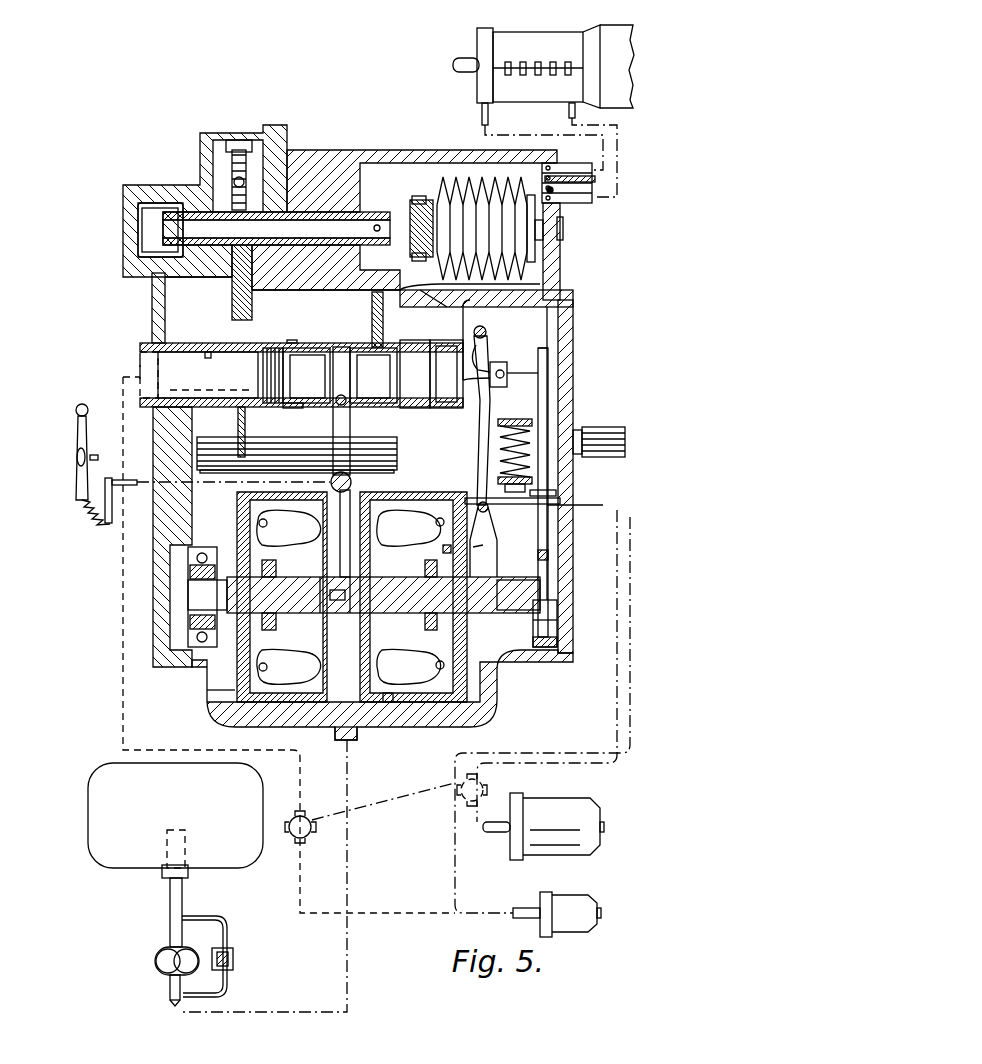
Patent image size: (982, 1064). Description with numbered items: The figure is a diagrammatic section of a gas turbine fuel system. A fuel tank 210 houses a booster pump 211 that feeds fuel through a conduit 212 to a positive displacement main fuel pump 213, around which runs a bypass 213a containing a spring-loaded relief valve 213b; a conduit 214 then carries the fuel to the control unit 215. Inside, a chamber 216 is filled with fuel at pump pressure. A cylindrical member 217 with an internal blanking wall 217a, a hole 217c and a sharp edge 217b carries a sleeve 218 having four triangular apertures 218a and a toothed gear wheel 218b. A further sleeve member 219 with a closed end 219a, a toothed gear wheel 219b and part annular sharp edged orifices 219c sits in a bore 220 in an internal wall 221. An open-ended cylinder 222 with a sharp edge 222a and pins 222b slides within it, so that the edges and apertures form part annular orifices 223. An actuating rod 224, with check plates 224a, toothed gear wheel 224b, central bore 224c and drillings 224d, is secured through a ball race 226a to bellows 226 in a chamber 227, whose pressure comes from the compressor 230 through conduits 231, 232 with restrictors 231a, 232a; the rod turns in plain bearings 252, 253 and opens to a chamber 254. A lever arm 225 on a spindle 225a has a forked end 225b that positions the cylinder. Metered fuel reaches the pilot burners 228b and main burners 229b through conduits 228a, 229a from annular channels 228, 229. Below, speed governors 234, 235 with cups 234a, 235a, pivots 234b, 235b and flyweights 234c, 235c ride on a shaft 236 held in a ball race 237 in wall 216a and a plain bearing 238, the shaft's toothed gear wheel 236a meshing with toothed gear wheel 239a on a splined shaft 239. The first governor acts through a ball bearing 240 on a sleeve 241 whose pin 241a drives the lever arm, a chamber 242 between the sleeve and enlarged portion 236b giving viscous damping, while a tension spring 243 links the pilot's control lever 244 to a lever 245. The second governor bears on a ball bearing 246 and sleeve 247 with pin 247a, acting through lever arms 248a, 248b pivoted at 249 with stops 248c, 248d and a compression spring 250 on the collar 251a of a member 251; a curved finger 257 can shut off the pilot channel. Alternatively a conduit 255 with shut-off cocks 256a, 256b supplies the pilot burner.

The fuel tank 210 is at (132, 843).
The booster pump 211 is at (167, 851).
The conduit 212 is at (170, 912).
The main fuel pump 213 is at (156, 963).
The bypass 213a is at (182, 926).
The spring-loaded relief valve 213b is at (234, 961).
The conduit 214 is at (353, 760).
The control unit 215 is at (545, 672).
The chamber 216 is at (330, 339).
The wall of chamber 216a is at (153, 656).
The cylindrical member 217 is at (155, 335).
The internal blanking wall 217a is at (250, 385).
The sharp edge 217b is at (246, 322).
The hole 217c is at (245, 367).
The sleeve 218 is at (196, 343).
The triangular apertures 218a is at (272, 364).
The toothed gear wheel 218b is at (236, 345).
The sleeve member 219 is at (530, 312).
The closed end 219a is at (500, 352).
The toothed gear wheel 219b is at (372, 309).
The part annular sharp edged orifices 219c is at (431, 374).
The bore 220 is at (562, 297).
The internal wall 221 is at (482, 290).
The open-ended cylinder 222 is at (324, 404).
The sharp edge 222a is at (290, 405).
The pins 222b is at (332, 380).
The part annular orifices 223 is at (240, 412).
The actuating rod 224 is at (362, 210).
The check plates 224a is at (247, 140).
The toothed gear wheel 224b is at (204, 162).
The central bore 224c is at (142, 206).
The drillings 224d is at (329, 267).
The lever arm 225 is at (343, 445).
The spindle 225a is at (352, 483).
The forked end 225b is at (291, 345).
The bellows 226 is at (445, 185).
The ball race 226a is at (418, 200).
The chamber 227 is at (404, 277).
The annular channel 228 is at (417, 303).
The conduit 228a is at (560, 522).
The pilot burners 228b is at (566, 907).
The annular channel 229 is at (468, 303).
The conduit 229a is at (590, 505).
The main burners 229b is at (565, 823).
The compressor 230 is at (498, 40).
The conduit 231 is at (568, 171).
The restrictor 231a is at (532, 162).
The conduit 232 is at (596, 192).
The restrictor 232a is at (555, 193).
The speed governor 234 is at (307, 641).
The cylindrical cup 234a is at (240, 700).
The pivots 234b is at (240, 496).
The flyweights 234c is at (302, 668).
The speed governor 235 is at (453, 626).
The cylindrical cup 235a is at (440, 741).
The pivots 235b is at (436, 523).
The flyweights 235c is at (398, 704).
The shaft 236 is at (527, 600).
The toothed gear wheel 236a is at (549, 595).
The enlarged portion 236b is at (276, 595).
The ball race 237 is at (190, 577).
The plain bearing 238 is at (549, 582).
The splined shaft 239 is at (549, 470).
The toothed gear wheel 239a is at (549, 547).
The ball bearing 240 is at (270, 563).
The sleeve 241 is at (292, 576).
The pin 241a is at (362, 586).
The chamber 242 is at (302, 606).
The tension spring 243 is at (94, 514).
The pilot's control lever 244 is at (82, 404).
The lever 245 is at (108, 526).
The ball bearing 246 is at (402, 660).
The sleeve 247 is at (557, 641).
The pin 247a is at (558, 622).
The lever arm 248a is at (485, 420).
The lever arm 248b is at (484, 550).
The stop 248c is at (478, 441).
The stop 248d is at (478, 460).
The pivot 249 is at (480, 531).
The compression spring 250 is at (599, 442).
The member 251 is at (532, 396).
The collar 251a is at (508, 375).
The plain bearing 252 is at (232, 180).
The plain bearing 253 is at (292, 200).
The chamber 254 is at (150, 228).
The conduit 255 is at (400, 915).
The shut-off cock 256a is at (312, 832).
The shut-off cock 256b is at (461, 792).
The curved finger 257 is at (488, 334).